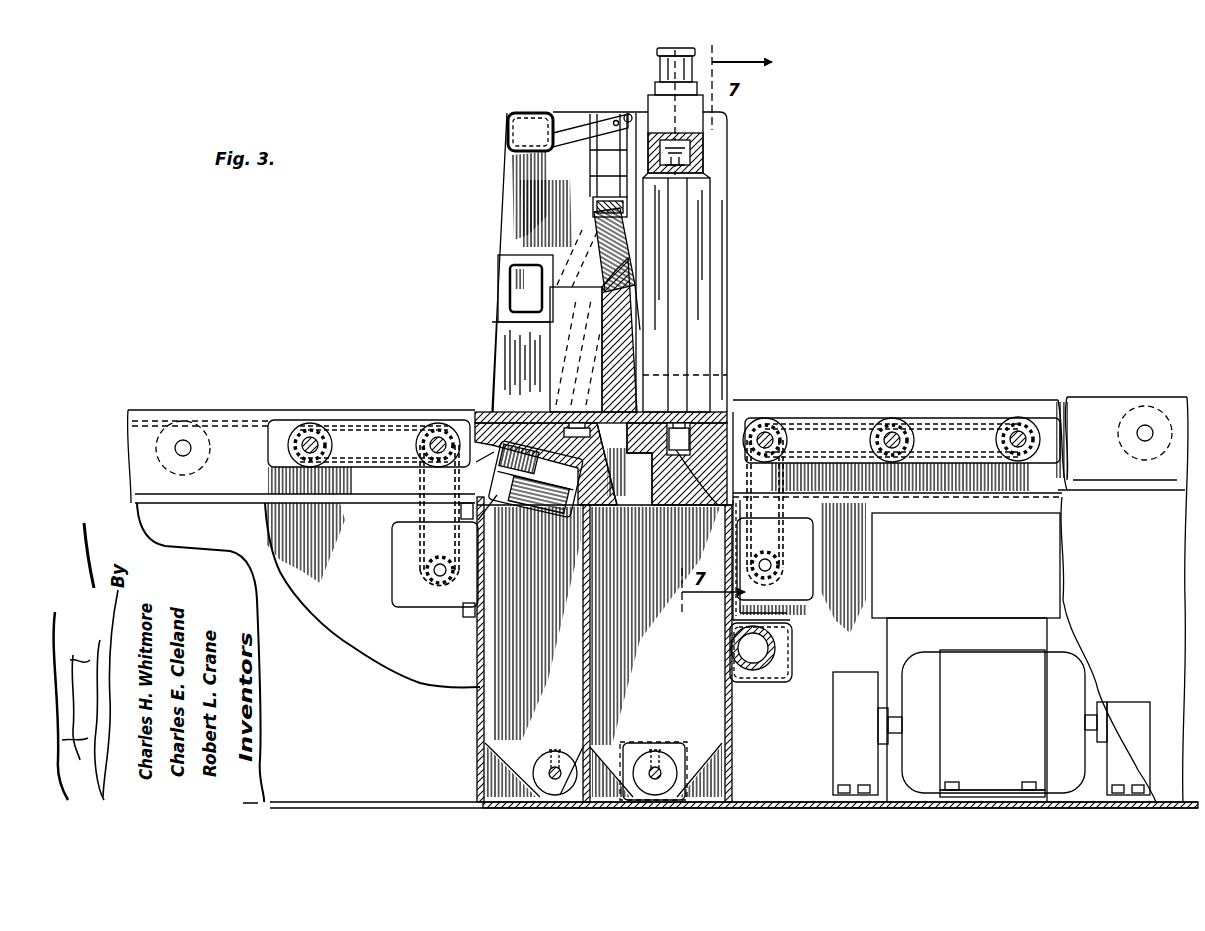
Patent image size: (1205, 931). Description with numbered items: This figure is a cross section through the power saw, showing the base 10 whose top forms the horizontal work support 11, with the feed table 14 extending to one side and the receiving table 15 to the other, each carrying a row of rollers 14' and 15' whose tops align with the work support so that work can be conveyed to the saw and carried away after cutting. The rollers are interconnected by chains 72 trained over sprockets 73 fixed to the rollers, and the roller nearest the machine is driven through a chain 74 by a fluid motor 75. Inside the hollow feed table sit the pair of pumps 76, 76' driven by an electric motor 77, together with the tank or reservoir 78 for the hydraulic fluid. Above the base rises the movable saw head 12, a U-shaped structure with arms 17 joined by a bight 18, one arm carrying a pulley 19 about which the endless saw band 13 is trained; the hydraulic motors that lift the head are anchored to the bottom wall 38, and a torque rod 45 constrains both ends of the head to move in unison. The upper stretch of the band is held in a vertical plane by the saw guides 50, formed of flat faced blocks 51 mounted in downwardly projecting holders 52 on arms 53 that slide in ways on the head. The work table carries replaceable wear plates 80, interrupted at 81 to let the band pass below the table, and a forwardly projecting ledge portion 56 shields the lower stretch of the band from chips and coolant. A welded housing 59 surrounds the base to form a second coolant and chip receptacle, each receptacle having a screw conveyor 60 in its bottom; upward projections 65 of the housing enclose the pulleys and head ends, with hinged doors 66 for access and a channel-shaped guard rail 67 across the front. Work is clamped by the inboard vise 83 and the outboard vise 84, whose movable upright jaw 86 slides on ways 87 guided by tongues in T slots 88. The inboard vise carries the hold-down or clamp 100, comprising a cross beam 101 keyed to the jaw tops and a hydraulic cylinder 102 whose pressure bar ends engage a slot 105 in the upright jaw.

The base 10 is at (578, 678).
The work support 11 is at (506, 393).
The movable saw head 12 is at (546, 562).
The endless saw band 13 is at (606, 208).
The feed table 14 is at (960, 578).
The rollers 14' is at (969, 413).
The receiving table 15 is at (304, 569).
The rollers 15' is at (297, 425).
The arms 17 is at (624, 330).
The bight 18 is at (477, 565).
The pulley 19 is at (597, 264).
The bottom wall 38 is at (713, 783).
The torque rod 45 is at (753, 664).
The saw guides 50 is at (571, 138).
The blocks 51 is at (601, 215).
The holders 52 is at (612, 192).
The arms 53 is at (628, 116).
The ledge portion 56 is at (479, 412).
The housing 59 is at (477, 704).
The screw conveyor 60 is at (560, 766).
The upward projections of the housing 65 is at (718, 130).
The hinged doors 66 is at (508, 170).
The guard rail 67 is at (508, 124).
The chains 72 is at (381, 462).
The sprockets 73 is at (288, 447).
The chain 74 is at (420, 511).
The fluid motor 75 is at (392, 575).
The pump 76 is at (837, 733).
The pump 76' is at (1141, 748).
The electric motor 77 is at (997, 725).
The tank or reservoir 78 is at (984, 569).
The wear plates 80 is at (511, 410).
The interruption 81 is at (603, 386).
The main or inboard vise 83 is at (744, 272).
The outboard vise 84 is at (541, 333).
The movable upright jaw 86 is at (705, 302).
The ways 87 is at (689, 411).
The T slots 88 is at (586, 424).
The hold-down or clamp 100 is at (641, 82).
The cross beam 101 is at (700, 150).
The hydraulic cylinder 102 is at (663, 64).
The slot 105 is at (688, 240).